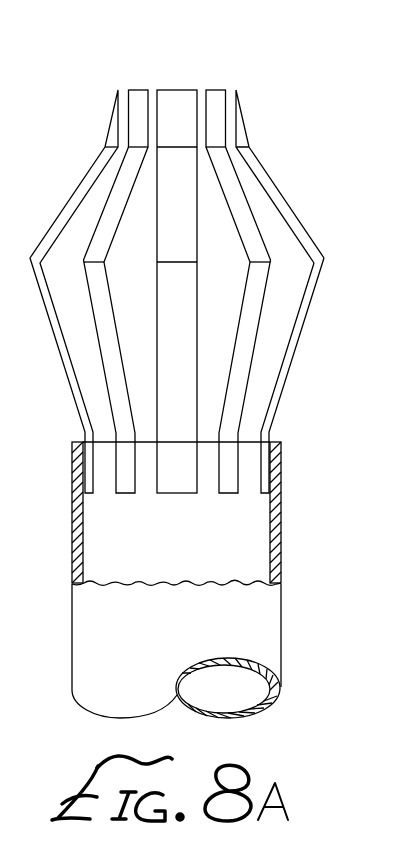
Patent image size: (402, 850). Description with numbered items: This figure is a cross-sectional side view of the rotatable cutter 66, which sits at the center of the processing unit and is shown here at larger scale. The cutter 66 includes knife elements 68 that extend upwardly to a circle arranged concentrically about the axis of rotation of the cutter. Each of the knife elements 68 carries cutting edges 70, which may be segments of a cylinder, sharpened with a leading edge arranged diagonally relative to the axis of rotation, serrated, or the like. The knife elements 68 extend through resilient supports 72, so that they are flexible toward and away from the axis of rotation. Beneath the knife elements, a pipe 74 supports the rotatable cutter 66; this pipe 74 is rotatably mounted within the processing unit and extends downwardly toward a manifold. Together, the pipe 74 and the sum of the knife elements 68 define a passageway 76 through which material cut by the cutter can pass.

The rotatable cutter 66 is at (299, 166).
The knife elements 68 is at (253, 155).
The cutting edges 70 is at (178, 90).
The resilient supports 72 is at (303, 333).
The pipe 74 is at (281, 528).
The passageway 76 is at (82, 541).